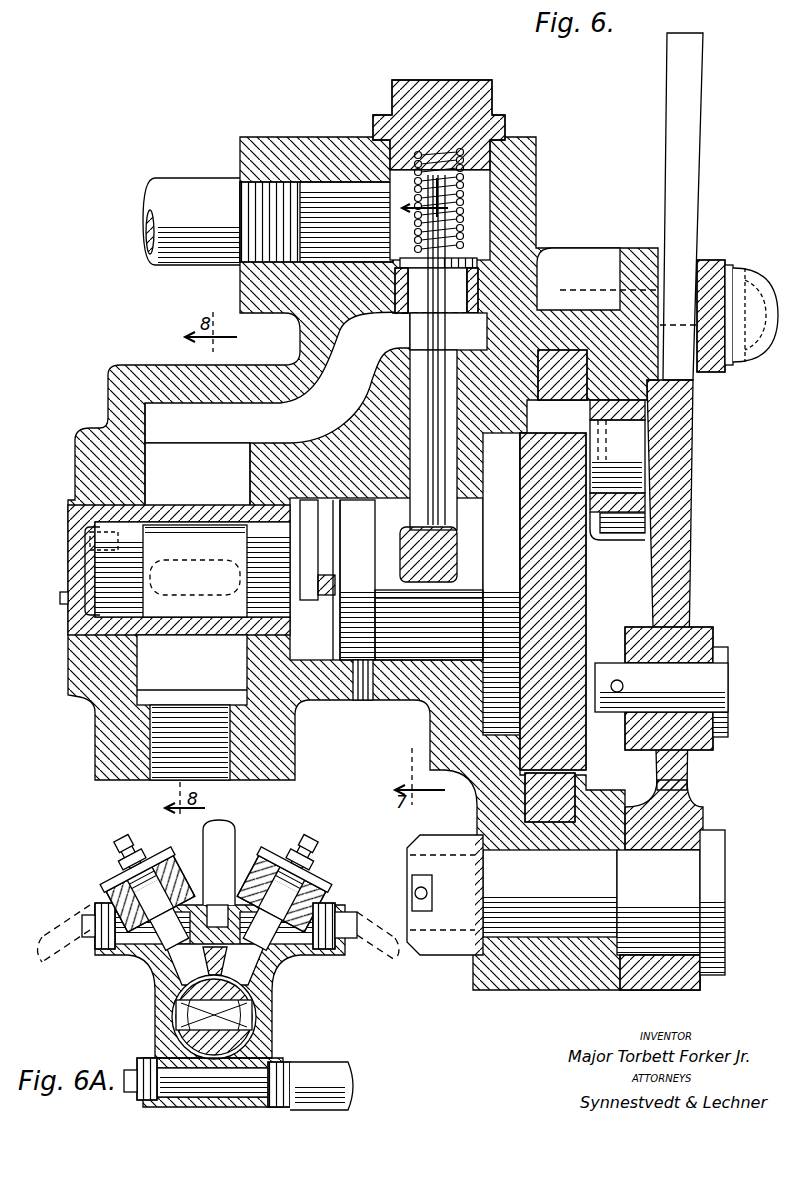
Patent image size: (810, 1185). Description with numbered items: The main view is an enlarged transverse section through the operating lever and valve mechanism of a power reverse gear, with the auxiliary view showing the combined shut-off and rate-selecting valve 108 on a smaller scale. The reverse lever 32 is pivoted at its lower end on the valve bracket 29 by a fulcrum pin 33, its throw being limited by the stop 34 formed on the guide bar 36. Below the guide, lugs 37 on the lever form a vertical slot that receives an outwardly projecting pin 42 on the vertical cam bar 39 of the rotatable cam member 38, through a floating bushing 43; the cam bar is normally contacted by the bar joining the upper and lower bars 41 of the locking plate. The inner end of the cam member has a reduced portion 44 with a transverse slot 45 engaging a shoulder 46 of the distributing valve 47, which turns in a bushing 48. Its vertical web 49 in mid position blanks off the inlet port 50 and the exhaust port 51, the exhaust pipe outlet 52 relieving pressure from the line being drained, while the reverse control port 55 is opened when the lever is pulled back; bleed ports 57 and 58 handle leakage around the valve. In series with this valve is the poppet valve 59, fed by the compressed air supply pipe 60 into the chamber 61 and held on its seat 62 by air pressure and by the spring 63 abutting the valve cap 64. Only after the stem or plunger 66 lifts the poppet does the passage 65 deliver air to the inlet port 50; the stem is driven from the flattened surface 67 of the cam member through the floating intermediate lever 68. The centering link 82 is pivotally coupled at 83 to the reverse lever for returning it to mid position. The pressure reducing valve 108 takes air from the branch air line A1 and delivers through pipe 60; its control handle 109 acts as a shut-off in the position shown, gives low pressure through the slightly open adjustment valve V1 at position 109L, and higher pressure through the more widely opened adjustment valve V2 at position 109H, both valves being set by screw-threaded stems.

In FIG. 6, the valve bracket 29 is at (316, 705).
In FIG. 6, the reverse lever 32 is at (688, 182).
In FIG. 6, the fulcrum pin 33 is at (566, 910).
In FIG. 6, the stop 34 is at (686, 258).
In FIG. 6, the guide bar 36 is at (706, 372).
In FIG. 6, the lugs 37 is at (620, 535).
In FIG. 6, the rotatable cam member 38 is at (501, 584).
In FIG. 6, the vertical cam bar 39 is at (553, 601).
In FIG. 6, the upper and lower bars 41 is at (552, 400).
In FIG. 6, the outwardly projecting pin 42 is at (617, 456).
In FIG. 6, the floating bushing 43 is at (593, 540).
In FIG. 6, the reduced portion 44 is at (337, 580).
In FIG. 6, the transverse slot 45 is at (340, 580).
In FIG. 6, the shoulder 46 is at (319, 576).
In FIG. 6, the distributing valve 47 is at (190, 573).
In FIG. 6, the bushing 48 is at (68, 636).
In FIG. 6, the vertical web 49 is at (195, 571).
In FIG. 6, the inlet port 50 is at (178, 505).
In FIG. 6, the exhaust port 51 is at (186, 636).
In FIG. 6, the exhaust pipe outlet 52 is at (222, 782).
In FIG. 6, the reverse control port 55 is at (192, 560).
In FIG. 6, the bleed port 57 is at (60, 602).
In FIG. 6, the bleed port 58 is at (366, 702).
In FIG. 6, the poppet valve 59 is at (466, 258).
In FIG. 6, the compressed air supply pipe 60 is at (163, 182).
In FIG. 6A, the compressed air supply pipe 60 is at (330, 1072).
In FIG. 6, the chamber 61 is at (461, 202).
In FIG. 6, the seat 62 is at (437, 290).
In FIG. 6, the spring 63 is at (461, 180).
In FIG. 6, the valve cap 64 is at (492, 112).
In FIG. 6, the passage 65 is at (277, 411).
In FIG. 6, the stem or plunger 66 is at (448, 352).
In FIG. 6, the flattened surface 67 is at (430, 598).
In FIG. 6, the floating intermediate lever 68 is at (460, 548).
In FIG. 6, the centering link 82 is at (703, 628).
In FIG. 6, the pivotal coupling 83 is at (661, 687).
In FIG. 6A, the pressure reducing valve 108 is at (155, 1038).
In FIG. 6A, the control handle 109 is at (235, 842).
In FIG. 6A, the high pressure handle position 109H is at (52, 945).
In FIG. 6A, the low pressure handle position 109L is at (380, 950).
In FIG. 6A, the adjustment valve V1 is at (160, 958).
In FIG. 6A, the adjustment valve V2 is at (270, 960).
In FIG. 6A, the branch air line A1 is at (332, 946).